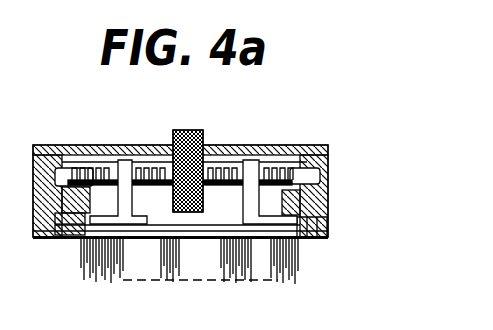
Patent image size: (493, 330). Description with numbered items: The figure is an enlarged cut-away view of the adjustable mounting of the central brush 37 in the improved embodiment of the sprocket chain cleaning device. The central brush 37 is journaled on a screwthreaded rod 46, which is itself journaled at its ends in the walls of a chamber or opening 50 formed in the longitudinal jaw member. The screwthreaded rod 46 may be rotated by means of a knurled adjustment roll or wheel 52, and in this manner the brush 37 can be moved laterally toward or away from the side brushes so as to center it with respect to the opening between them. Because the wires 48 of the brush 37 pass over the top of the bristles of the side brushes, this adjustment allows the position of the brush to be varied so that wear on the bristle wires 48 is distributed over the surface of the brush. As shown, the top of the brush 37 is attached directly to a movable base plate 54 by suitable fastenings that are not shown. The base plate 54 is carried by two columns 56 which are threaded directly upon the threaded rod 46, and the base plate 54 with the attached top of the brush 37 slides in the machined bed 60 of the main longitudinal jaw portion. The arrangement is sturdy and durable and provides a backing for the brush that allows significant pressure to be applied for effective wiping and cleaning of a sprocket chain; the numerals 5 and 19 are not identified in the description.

The cleaning head 5 is at (46, 176).
The housing 19 is at (281, 144).
The brush 37 is at (72, 237).
The screwthreaded rod 46 is at (271, 146).
The wires 48 is at (265, 262).
The chamber 50 is at (153, 156).
The knurled adjustment wheel 52 is at (192, 130).
The movable base plate 54 is at (80, 240).
The columns 56 is at (126, 196).
The machined bed 60 is at (327, 228).